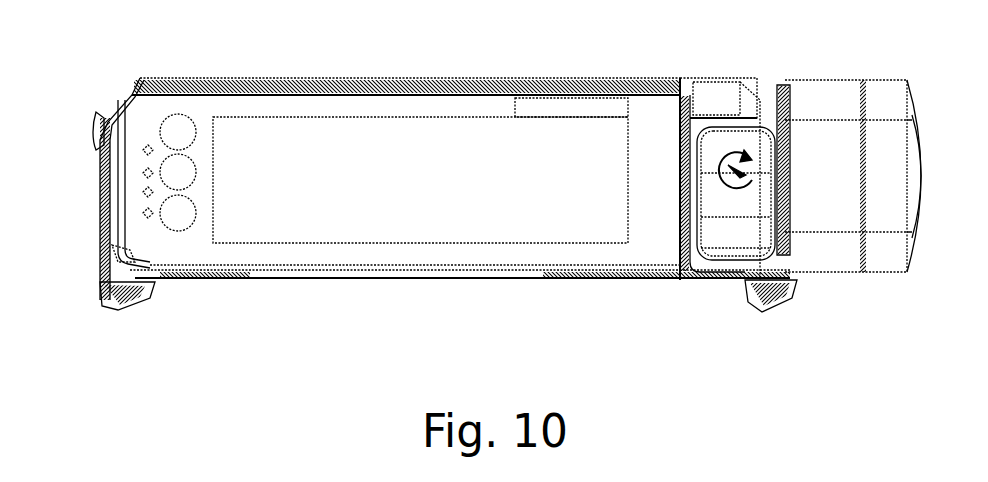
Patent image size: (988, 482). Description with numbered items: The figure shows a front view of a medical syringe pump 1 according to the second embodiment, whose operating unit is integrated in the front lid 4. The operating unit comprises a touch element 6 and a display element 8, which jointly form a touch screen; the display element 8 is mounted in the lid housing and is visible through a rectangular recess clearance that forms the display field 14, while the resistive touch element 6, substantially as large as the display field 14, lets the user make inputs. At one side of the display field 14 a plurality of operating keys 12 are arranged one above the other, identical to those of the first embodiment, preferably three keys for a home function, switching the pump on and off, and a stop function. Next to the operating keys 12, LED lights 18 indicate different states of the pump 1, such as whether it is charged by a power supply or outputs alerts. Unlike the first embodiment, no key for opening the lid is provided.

The syringe pump 1 is at (108, 80).
The front lid 4 is at (722, 75).
The touch element 6 is at (330, 250).
The display element 8 is at (517, 228).
The operating keys 12 is at (175, 217).
The display field 14 is at (593, 243).
The LED lights 18 is at (143, 212).